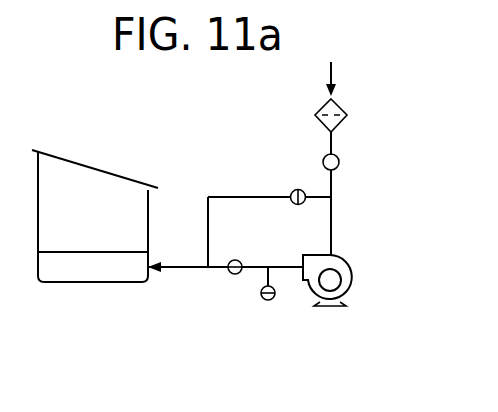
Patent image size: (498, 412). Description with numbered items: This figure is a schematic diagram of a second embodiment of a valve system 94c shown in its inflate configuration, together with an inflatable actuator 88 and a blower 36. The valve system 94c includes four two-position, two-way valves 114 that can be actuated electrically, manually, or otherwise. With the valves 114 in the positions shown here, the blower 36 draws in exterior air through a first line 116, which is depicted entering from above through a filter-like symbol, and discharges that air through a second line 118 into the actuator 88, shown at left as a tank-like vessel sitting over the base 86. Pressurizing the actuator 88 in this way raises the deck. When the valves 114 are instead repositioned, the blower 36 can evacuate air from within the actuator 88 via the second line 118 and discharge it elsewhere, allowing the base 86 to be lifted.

The actuator 88 is at (107, 168).
The base 86 is at (92, 287).
The second line 118 is at (183, 270).
The valve system 94c is at (233, 164).
The valves 114 is at (296, 190).
The first line 116 is at (331, 72).
The blower 36 is at (352, 275).